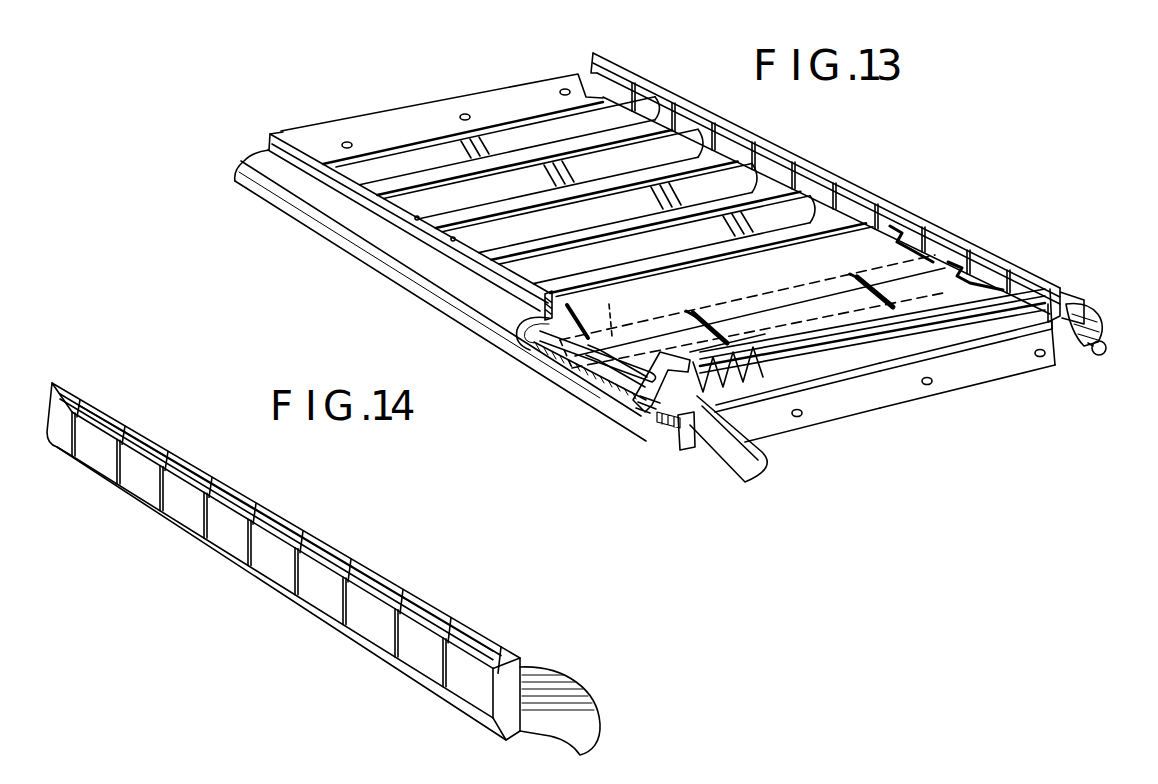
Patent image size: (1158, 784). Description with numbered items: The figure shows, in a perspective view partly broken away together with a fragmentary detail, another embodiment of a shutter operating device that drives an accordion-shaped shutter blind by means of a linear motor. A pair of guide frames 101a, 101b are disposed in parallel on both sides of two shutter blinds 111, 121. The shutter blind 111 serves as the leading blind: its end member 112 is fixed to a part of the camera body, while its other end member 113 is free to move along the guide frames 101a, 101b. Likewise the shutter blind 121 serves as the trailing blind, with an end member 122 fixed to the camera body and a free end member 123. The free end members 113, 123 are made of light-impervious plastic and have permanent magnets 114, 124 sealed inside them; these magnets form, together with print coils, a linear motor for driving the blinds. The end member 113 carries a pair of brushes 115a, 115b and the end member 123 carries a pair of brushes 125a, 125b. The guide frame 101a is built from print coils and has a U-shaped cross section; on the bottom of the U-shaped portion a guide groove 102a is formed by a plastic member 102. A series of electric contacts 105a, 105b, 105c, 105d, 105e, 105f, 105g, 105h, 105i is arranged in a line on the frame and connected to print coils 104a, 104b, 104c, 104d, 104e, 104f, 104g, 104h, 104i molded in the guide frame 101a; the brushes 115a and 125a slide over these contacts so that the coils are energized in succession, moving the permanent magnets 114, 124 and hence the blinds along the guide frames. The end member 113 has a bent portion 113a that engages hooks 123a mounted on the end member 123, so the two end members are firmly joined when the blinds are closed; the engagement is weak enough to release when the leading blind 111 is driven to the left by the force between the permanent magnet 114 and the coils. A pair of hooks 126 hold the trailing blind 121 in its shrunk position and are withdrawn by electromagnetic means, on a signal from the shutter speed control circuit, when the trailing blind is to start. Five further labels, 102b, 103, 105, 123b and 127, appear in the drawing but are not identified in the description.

In FIG. 13, the guide frame 101a is at (1062, 297).
In FIG. 13, the guide frame 101b is at (388, 259).
In FIG. 13, the plastic member 102 is at (1106, 348).
In FIG. 13, the guide groove 102a is at (1089, 307).
In FIG. 13, the pin bracket 102b is at (683, 446).
In FIG. 13, the spring 103 is at (1100, 324).
In FIG. 14, the print coil 104a is at (496, 649).
In FIG. 14, the print coil 104b is at (452, 616).
In FIG. 14, the print coil 104c is at (400, 587).
In FIG. 14, the print coil 104d is at (350, 557).
In FIG. 14, the print coil 104e is at (297, 527).
In FIG. 14, the print coil 104f is at (252, 500).
In FIG. 14, the print coil 104g is at (208, 474).
In FIG. 14, the print coil 104h is at (163, 447).
In FIG. 14, the print coil 104i is at (115, 423).
In FIG. 13, the side rail channel member 105 is at (846, 196).
In FIG. 14, the side rail channel member 105 is at (484, 682).
In FIG. 14, the electric contact 105a is at (477, 693).
In FIG. 14, the electric contact 105b is at (427, 667).
In FIG. 14, the electric contact 105c is at (380, 637).
In FIG. 14, the electric contact 105d is at (328, 598).
In FIG. 14, the electric contact 105e is at (280, 570).
In FIG. 14, the electric contact 105f is at (237, 548).
In FIG. 14, the electric contact 105g is at (187, 514).
In FIG. 14, the electric contact 105h is at (140, 486).
In FIG. 14, the electric contact 105i is at (93, 458).
In FIG. 13, the shutter blind 111 is at (750, 170).
In FIG. 13, the end member 112 is at (505, 100).
In FIG. 13, the end member 113 is at (523, 360).
In FIG. 13, the bent portion 113a is at (787, 303).
In FIG. 13, the permanent magnet 114 is at (609, 318).
In FIG. 13, the brush 115a is at (903, 230).
In FIG. 13, the brush 115b is at (580, 322).
In FIG. 13, the shutter blind 121 is at (838, 382).
In FIG. 13, the end member 122 is at (893, 390).
In FIG. 13, the end member 123 is at (587, 377).
In FIG. 13, the hook 123a is at (703, 317).
In FIG. 13, the clamp bar end 123b is at (980, 292).
In FIG. 13, the permanent magnet 124 is at (650, 328).
In FIG. 13, the brush 125a is at (965, 260).
In FIG. 13, the brush 125b is at (620, 393).
In FIG. 13, the hook 126 is at (1045, 360).
In FIG. 13, the handle 127 is at (737, 470).